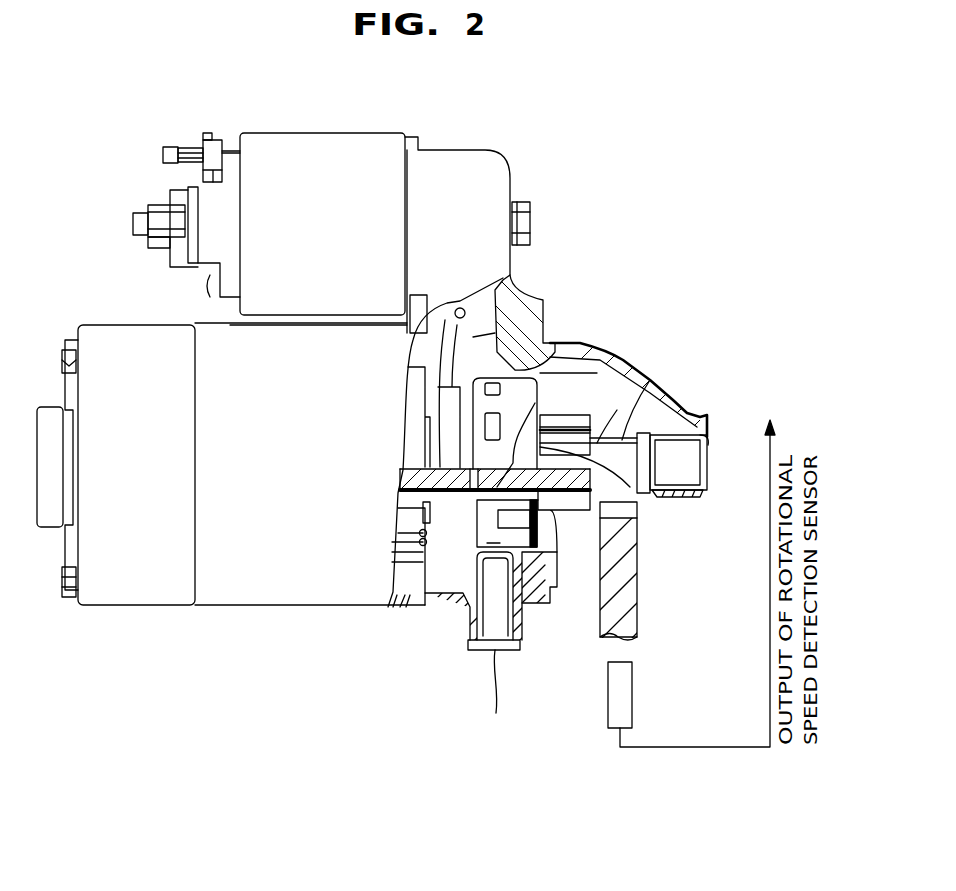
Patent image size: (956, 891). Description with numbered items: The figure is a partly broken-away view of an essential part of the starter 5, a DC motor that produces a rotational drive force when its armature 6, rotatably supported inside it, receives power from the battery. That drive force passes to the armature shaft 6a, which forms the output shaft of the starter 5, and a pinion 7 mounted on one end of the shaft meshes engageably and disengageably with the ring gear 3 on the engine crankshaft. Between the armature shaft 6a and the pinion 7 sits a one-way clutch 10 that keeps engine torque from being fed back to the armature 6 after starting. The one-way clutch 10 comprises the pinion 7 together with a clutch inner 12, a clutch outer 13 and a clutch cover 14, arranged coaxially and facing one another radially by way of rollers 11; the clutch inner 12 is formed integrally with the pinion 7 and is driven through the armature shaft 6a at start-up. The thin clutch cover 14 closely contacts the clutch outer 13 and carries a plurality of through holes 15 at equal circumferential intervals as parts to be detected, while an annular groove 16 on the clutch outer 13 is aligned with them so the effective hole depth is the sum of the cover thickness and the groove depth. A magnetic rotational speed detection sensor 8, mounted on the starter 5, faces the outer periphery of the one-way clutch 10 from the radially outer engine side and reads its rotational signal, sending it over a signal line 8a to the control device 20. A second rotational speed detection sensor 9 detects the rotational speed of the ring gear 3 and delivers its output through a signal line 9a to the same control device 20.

The control device 20 is at (378, 123).
The starter 5 is at (120, 307).
The one-way clutch 10 is at (556, 343).
The rollers 11 is at (470, 468).
The armature 6 is at (413, 455).
The through holes 15 is at (579, 340).
The annular groove 16 is at (512, 367).
The clutch inner 12 is at (507, 413).
The pinion 7 is at (577, 413).
The armature shaft 6a is at (640, 433).
The ring gear 3 is at (630, 510).
The rotational speed detection sensor 9 is at (623, 693).
The signal line 9a is at (768, 643).
The clutch outer 13 is at (480, 527).
The clutch cover 14 is at (523, 607).
The rotational speed detection sensor 8 is at (483, 647).
The signal line 8a is at (497, 703).